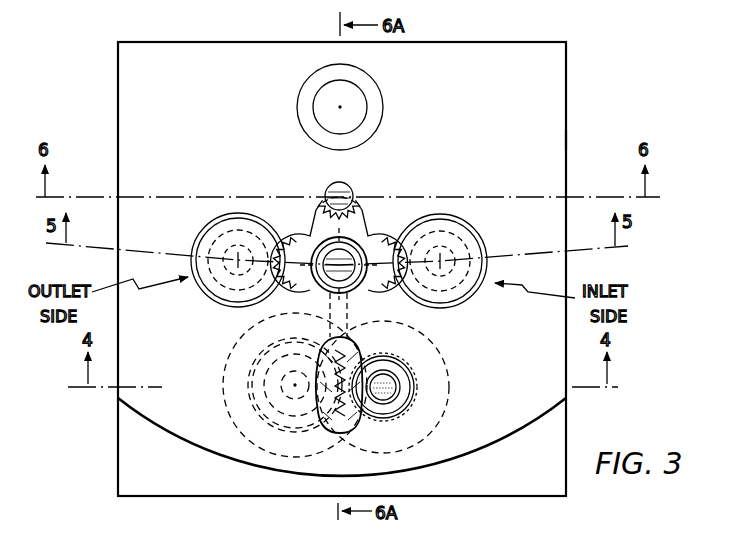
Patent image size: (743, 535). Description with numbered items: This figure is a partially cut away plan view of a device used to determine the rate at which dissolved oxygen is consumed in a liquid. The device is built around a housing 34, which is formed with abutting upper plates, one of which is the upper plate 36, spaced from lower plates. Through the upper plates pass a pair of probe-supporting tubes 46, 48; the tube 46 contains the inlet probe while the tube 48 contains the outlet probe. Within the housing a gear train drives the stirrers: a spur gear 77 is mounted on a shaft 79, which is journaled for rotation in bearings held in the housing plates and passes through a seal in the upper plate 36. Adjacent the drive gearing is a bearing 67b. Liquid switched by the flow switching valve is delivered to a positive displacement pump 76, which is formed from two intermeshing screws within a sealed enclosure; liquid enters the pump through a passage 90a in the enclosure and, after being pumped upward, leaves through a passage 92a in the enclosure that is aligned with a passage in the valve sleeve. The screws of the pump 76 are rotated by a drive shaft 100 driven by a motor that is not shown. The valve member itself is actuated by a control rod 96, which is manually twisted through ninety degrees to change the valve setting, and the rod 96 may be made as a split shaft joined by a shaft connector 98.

The housing 34 is at (110, 467).
The upper plate 36 is at (567, 139).
The probe-supporting tube 46 is at (487, 241).
The probe-supporting tube 48 is at (254, 216).
The gear cavity wall 67b is at (273, 243).
The positive displacement pump 76 is at (393, 360).
The spur gear 77 is at (333, 255).
The shaft 79 is at (348, 193).
The passage 90a is at (427, 327).
The passage 92a is at (247, 340).
The control rod 96 is at (314, 246).
The shaft connector 98 is at (365, 246).
The drive shaft 100 is at (425, 398).